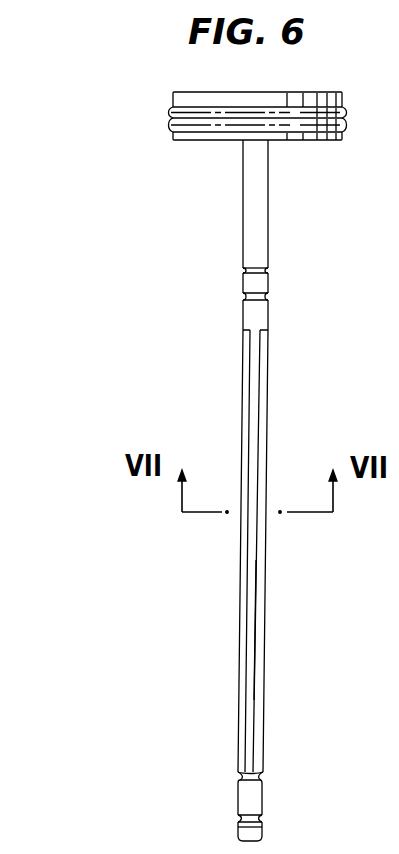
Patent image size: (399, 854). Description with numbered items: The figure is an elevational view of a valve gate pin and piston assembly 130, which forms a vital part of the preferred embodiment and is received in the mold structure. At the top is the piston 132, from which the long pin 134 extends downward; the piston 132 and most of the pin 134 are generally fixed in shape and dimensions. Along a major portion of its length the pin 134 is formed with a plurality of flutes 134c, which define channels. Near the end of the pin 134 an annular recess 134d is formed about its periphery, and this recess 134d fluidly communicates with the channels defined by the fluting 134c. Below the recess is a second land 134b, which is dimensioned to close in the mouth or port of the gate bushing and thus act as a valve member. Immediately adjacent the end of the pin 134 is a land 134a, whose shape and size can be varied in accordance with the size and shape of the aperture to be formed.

The valve gate pin and piston assembly 130 is at (165, 112).
The piston 132 is at (343, 141).
The pin 134 is at (270, 384).
The land 134a is at (260, 829).
The second land 134b is at (258, 800).
The flutes 134c is at (262, 657).
The annular recess 134d is at (265, 775).